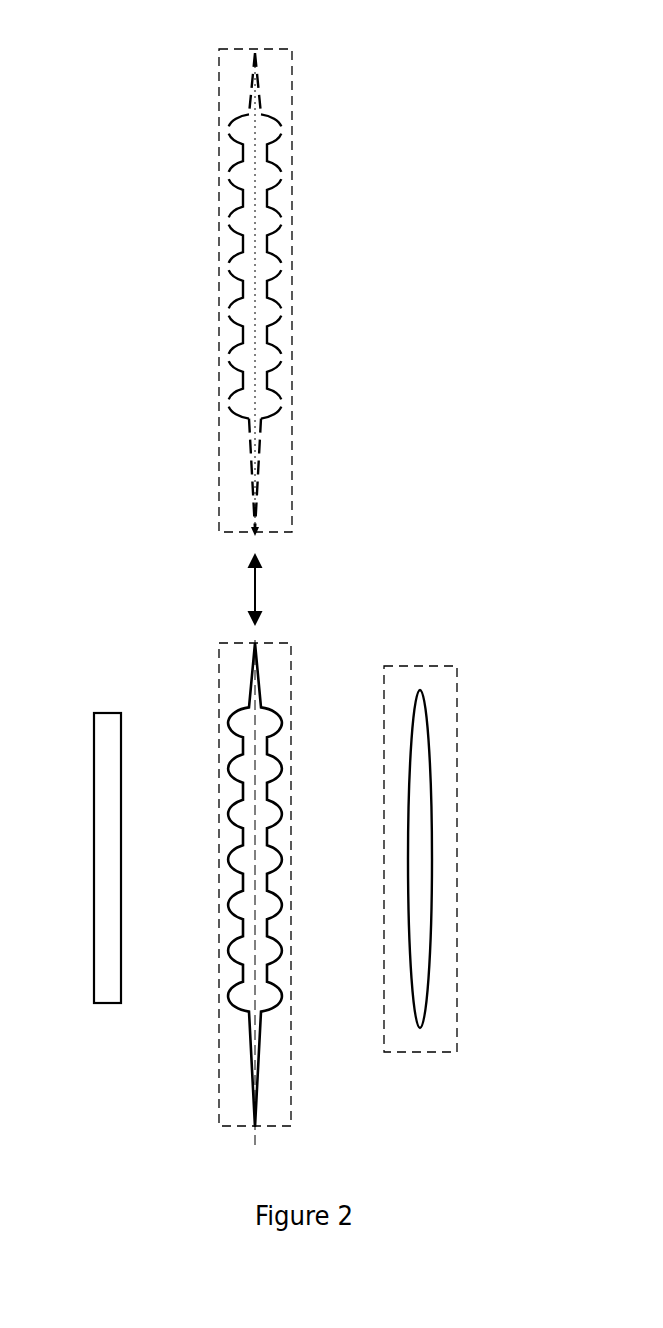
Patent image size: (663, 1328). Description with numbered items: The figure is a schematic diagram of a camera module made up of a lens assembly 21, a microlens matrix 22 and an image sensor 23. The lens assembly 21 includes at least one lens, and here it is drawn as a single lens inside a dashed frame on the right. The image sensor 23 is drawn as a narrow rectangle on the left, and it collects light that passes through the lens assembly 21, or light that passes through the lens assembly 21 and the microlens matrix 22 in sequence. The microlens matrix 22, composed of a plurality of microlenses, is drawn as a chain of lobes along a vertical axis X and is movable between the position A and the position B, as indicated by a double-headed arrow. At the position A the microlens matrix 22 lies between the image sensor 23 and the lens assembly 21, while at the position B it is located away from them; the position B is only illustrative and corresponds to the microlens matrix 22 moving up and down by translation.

The light receiving element / second electrode 21 is at (444, 822).
The lobed oscillating element shown in positions A and B 22 is at (260, 94).
The light emitting element / first electrode 23 is at (105, 713).
The first position of element 22 A is at (292, 705).
The second position of element 22 B is at (292, 255).
The axis X is at (263, 1160).